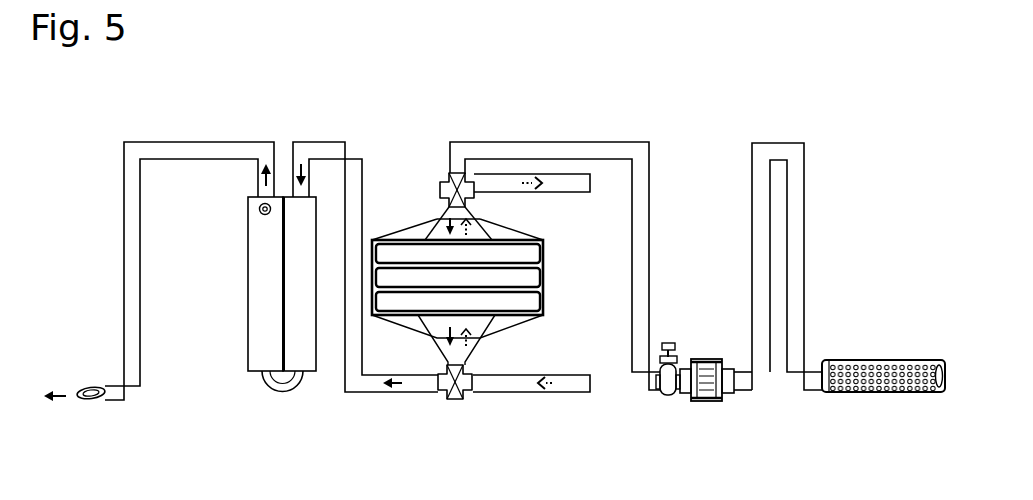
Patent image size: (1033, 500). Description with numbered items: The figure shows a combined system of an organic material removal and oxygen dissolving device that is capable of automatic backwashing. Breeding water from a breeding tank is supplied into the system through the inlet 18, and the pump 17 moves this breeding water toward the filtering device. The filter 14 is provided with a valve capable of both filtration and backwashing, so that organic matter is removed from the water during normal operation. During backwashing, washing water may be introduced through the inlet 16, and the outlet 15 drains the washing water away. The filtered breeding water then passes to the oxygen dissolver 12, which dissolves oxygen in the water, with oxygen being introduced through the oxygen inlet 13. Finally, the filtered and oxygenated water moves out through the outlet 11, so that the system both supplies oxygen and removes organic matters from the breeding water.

The outlet 11 is at (114, 398).
The oxygen dissolver 12 is at (248, 293).
The oxygen inlet 13 is at (259, 209).
The filter 14 is at (449, 174).
The outlet 15 is at (531, 194).
The inlet 16 is at (546, 394).
The pump 17 is at (700, 401).
The inlet 18 is at (935, 362).